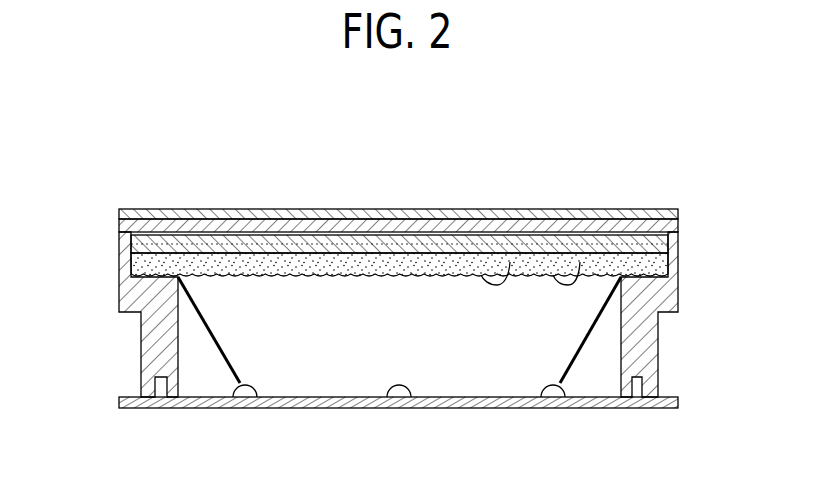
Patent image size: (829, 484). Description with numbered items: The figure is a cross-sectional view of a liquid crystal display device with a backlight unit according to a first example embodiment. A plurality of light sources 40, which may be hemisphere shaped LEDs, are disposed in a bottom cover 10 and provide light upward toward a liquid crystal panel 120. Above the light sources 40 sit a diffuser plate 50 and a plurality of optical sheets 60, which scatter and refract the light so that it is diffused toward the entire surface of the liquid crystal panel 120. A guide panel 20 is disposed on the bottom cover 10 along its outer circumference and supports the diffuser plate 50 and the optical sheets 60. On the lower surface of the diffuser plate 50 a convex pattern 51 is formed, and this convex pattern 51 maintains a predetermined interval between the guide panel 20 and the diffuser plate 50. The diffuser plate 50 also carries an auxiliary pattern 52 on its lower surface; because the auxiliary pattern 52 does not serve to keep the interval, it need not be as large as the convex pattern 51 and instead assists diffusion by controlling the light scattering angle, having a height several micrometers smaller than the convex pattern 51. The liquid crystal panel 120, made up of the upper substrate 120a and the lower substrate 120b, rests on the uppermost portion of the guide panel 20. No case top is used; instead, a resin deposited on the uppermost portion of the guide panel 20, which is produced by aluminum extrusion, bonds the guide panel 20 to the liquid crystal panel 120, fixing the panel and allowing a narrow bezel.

The bottom cover 10 is at (357, 406).
The guide panel 20 is at (153, 341).
The light sources 40 is at (245, 399).
The diffuser plate 50 is at (205, 262).
The convex pattern 51 is at (580, 262).
The auxiliary pattern 52 is at (510, 262).
The optical sheets 60 is at (262, 243).
The liquid crystal panel 120 is at (398, 175).
The upper substrate 120a is at (415, 150).
The lower substrate 120b is at (393, 214).